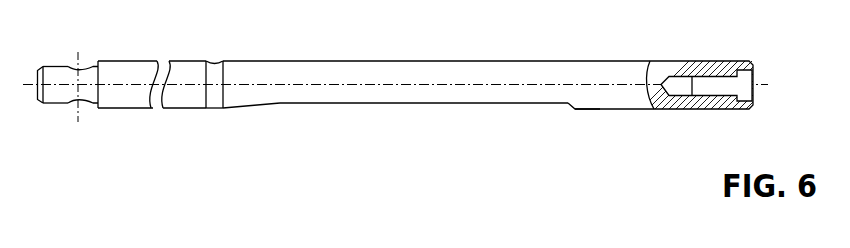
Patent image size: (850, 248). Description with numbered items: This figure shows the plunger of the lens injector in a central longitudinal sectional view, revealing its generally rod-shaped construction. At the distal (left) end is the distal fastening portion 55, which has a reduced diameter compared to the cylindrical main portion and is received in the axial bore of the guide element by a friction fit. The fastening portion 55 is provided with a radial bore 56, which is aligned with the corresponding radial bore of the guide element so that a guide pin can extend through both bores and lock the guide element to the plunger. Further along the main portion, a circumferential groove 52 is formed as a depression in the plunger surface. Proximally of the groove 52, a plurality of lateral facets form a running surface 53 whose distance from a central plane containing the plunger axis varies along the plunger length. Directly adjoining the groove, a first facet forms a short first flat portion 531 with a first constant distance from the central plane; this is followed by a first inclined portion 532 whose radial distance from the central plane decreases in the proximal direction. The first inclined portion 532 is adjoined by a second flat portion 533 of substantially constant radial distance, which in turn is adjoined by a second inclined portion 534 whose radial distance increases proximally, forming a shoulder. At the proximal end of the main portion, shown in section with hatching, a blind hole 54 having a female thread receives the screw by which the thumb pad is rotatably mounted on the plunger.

The circumferential groove 52 is at (208, 98).
The running surface 53 is at (387, 129).
The first flat portion 531 is at (246, 106).
The first inclined portion 532 is at (275, 103).
The second flat portion 533 is at (427, 103).
The second inclined portion 534 is at (568, 103).
The blind hole 54 is at (712, 78).
The distal fastening portion 55 is at (52, 95).
The radial bore 56 is at (80, 97).